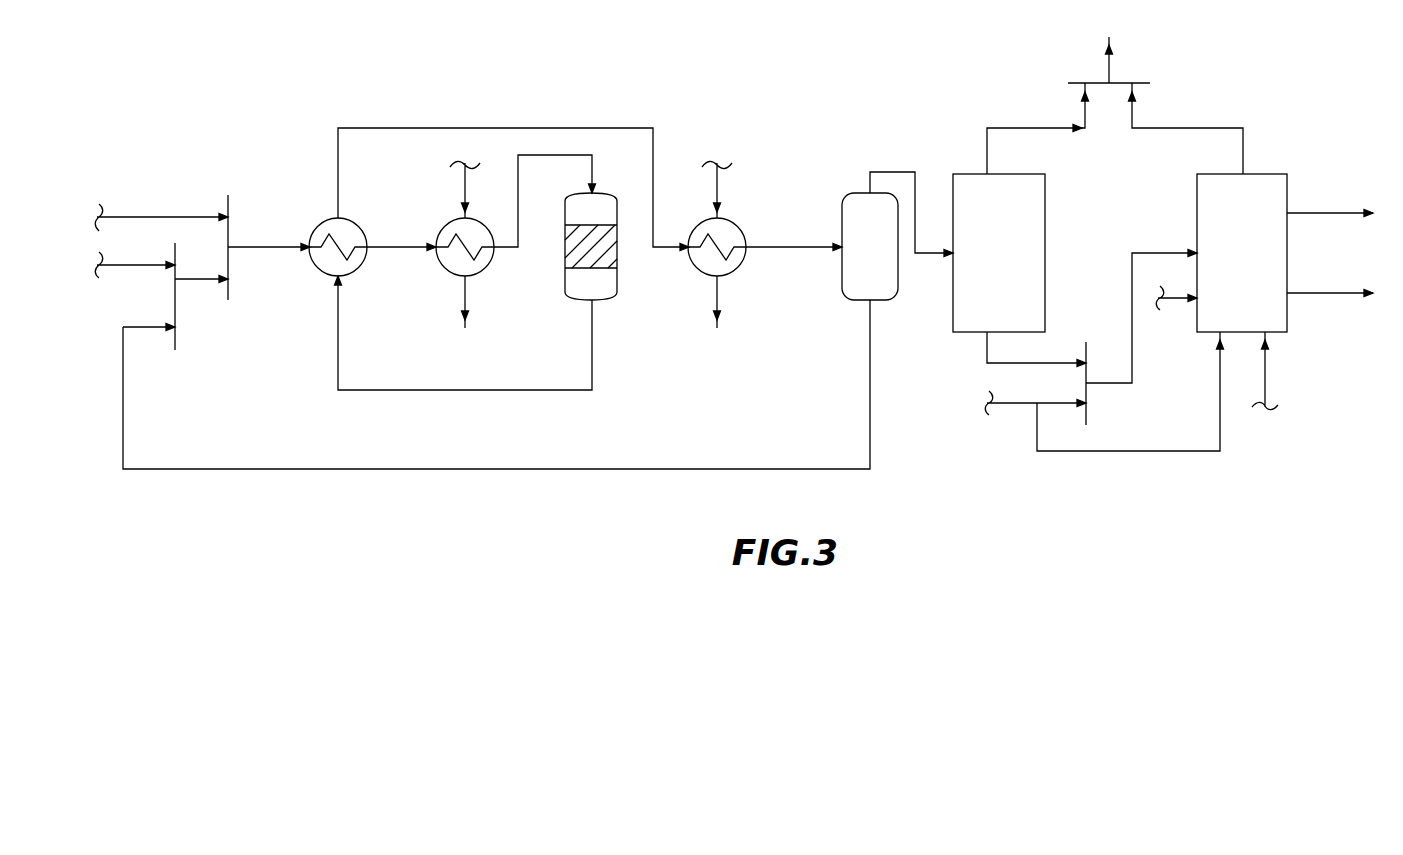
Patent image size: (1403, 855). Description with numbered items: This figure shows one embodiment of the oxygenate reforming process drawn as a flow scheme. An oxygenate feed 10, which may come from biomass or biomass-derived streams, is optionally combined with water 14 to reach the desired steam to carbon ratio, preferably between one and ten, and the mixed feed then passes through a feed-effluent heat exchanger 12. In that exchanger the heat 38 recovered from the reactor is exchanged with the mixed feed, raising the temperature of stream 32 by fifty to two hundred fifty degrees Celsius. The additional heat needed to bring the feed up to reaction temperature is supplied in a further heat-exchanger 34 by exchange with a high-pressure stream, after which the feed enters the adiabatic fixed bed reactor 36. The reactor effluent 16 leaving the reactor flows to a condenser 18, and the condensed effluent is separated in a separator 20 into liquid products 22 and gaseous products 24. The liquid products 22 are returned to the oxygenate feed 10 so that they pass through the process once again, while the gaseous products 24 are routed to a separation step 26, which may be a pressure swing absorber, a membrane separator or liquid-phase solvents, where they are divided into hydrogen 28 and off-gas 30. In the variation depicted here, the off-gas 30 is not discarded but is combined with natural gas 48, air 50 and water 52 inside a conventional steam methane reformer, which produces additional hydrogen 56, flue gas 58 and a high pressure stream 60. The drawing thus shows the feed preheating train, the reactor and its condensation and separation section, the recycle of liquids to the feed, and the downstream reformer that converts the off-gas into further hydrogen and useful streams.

The oxygenate feed 10 is at (132, 268).
The feed-effluent heat exchanger 12 is at (313, 230).
The water 14 is at (125, 215).
The reactor effluent 16 is at (447, 128).
The condenser 18 is at (720, 180).
The separator 20 is at (857, 265).
The liquid products 22 is at (438, 468).
The gaseous products 24 is at (878, 172).
The separation step 26 is at (987, 268).
The hydrogen 28 is at (997, 127).
The off-gas 30 is at (1050, 362).
The stream 32 is at (403, 250).
The heat-exchanger 34 is at (565, 157).
The adiabatic fixed bed reactor 36 is at (617, 285).
The heat 38 is at (467, 290).
The natural gas 48 is at (1112, 453).
The air 50 is at (1267, 388).
The water 52 is at (1133, 335).
The additional hydrogen 56 is at (1195, 127).
The flue gas 58 is at (1303, 213).
The high pressure stream 60 is at (1312, 293).